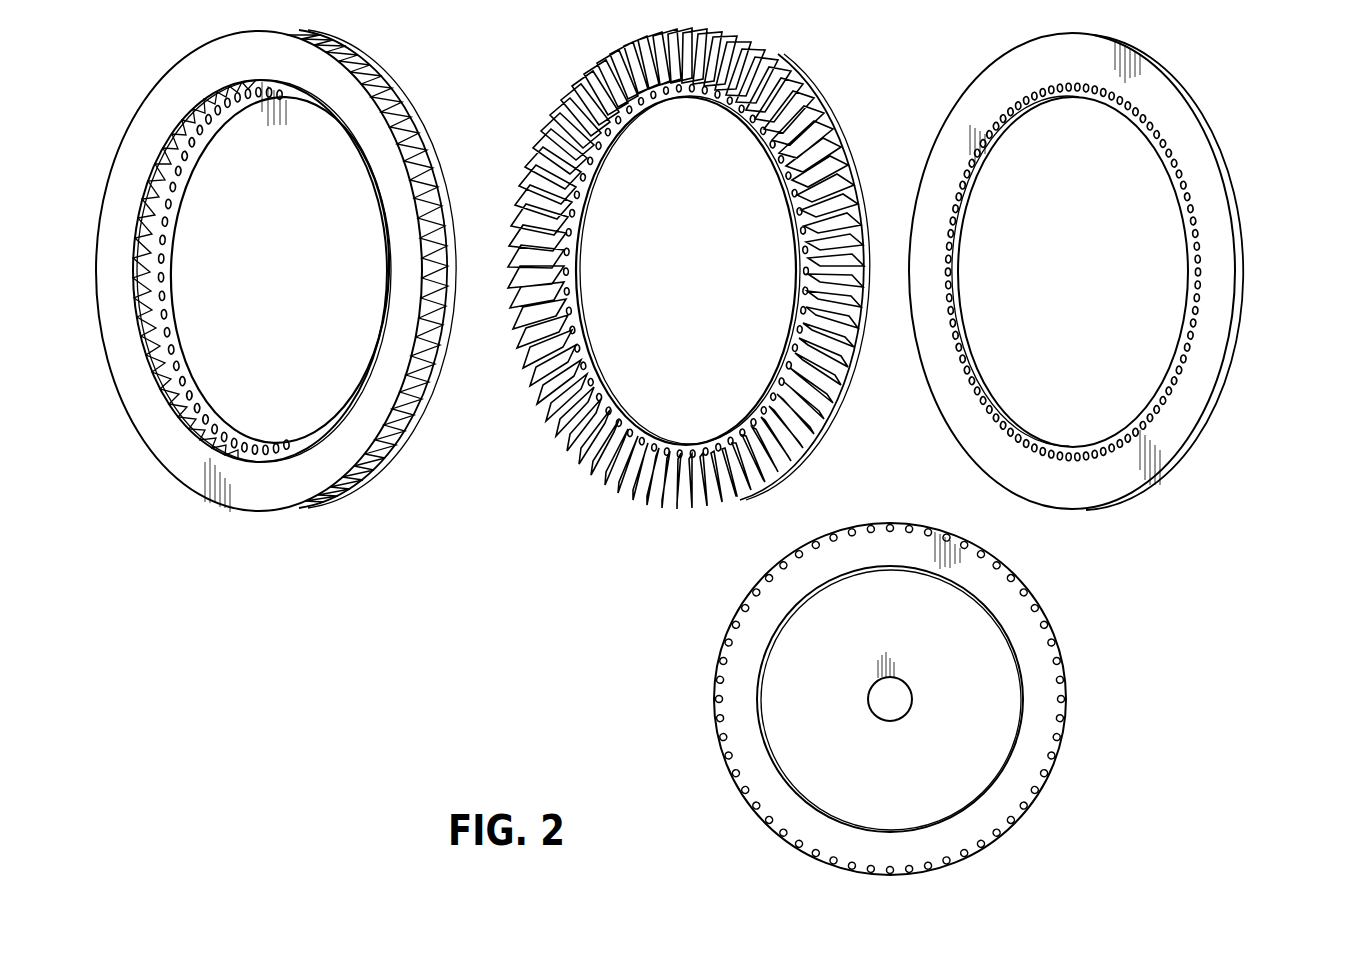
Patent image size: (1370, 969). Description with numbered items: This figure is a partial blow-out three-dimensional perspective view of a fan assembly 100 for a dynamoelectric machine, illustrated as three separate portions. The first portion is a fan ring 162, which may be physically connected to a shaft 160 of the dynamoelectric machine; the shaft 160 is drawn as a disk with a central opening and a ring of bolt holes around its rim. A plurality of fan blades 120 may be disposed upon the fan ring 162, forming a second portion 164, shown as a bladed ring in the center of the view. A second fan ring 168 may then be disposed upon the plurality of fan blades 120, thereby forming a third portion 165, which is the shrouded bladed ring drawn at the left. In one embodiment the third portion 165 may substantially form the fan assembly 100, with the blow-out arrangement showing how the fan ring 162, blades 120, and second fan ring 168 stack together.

The fan assembly 100 is at (1288, 90).
The fan blades 120 is at (600, 64).
The shaft 160 is at (715, 703).
The fan ring 162 is at (972, 98).
The second portion 164 is at (606, 556).
The third portion 165 is at (230, 556).
The second fan ring 168 is at (155, 432).